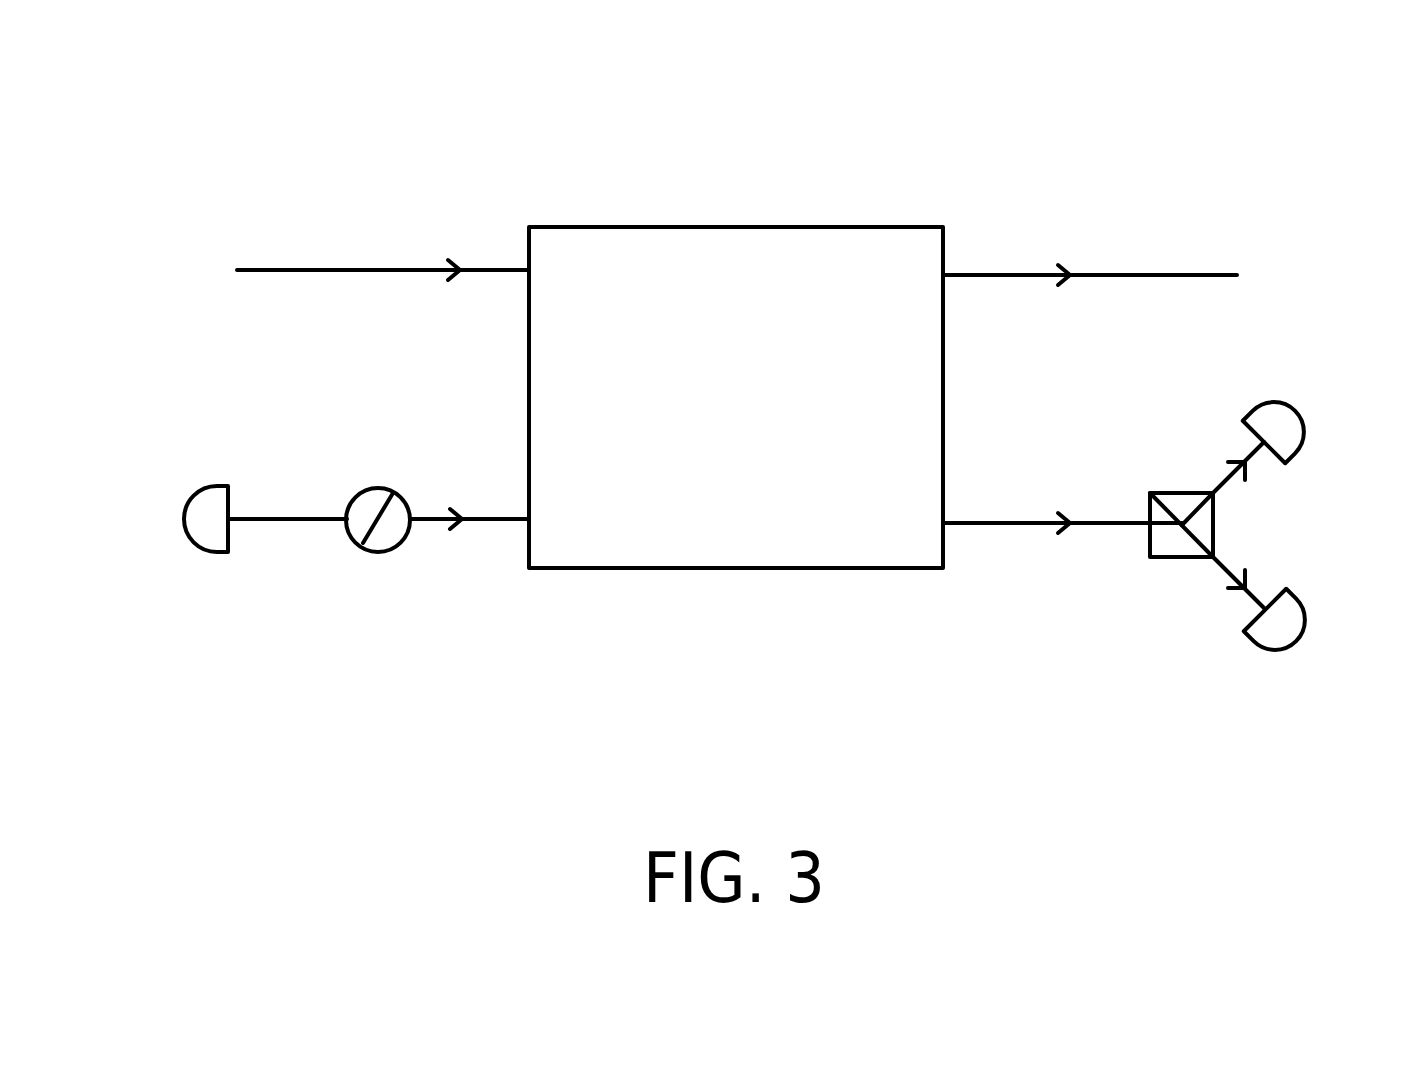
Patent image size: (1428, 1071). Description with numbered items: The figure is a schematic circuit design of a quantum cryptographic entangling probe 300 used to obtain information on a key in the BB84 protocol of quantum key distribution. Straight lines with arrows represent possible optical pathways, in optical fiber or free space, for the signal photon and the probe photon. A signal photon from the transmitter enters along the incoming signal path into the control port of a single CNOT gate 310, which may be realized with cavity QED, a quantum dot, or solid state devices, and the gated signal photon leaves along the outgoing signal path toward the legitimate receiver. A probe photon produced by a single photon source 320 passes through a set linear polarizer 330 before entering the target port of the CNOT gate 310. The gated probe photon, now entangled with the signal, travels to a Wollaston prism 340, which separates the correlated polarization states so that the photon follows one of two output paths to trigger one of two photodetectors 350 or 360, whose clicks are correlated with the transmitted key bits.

The quantum cryptographic entangling probe 300 is at (670, 148).
The CNOT gate 310 is at (738, 214).
The single photon source 320 is at (204, 562).
The linear polarizer 330 is at (375, 566).
The Wollaston prism 340 is at (1173, 571).
The photodetector 350 is at (1308, 461).
The photodetector 360 is at (1265, 665).